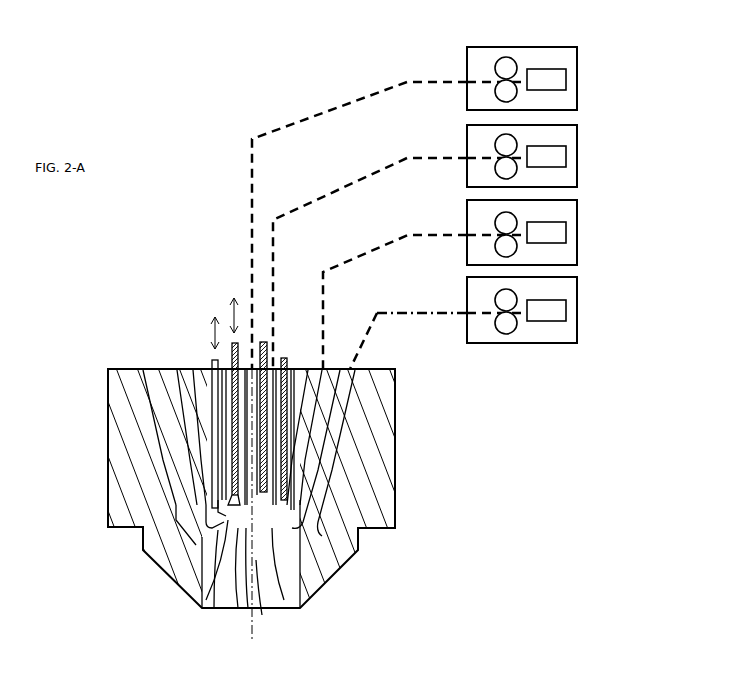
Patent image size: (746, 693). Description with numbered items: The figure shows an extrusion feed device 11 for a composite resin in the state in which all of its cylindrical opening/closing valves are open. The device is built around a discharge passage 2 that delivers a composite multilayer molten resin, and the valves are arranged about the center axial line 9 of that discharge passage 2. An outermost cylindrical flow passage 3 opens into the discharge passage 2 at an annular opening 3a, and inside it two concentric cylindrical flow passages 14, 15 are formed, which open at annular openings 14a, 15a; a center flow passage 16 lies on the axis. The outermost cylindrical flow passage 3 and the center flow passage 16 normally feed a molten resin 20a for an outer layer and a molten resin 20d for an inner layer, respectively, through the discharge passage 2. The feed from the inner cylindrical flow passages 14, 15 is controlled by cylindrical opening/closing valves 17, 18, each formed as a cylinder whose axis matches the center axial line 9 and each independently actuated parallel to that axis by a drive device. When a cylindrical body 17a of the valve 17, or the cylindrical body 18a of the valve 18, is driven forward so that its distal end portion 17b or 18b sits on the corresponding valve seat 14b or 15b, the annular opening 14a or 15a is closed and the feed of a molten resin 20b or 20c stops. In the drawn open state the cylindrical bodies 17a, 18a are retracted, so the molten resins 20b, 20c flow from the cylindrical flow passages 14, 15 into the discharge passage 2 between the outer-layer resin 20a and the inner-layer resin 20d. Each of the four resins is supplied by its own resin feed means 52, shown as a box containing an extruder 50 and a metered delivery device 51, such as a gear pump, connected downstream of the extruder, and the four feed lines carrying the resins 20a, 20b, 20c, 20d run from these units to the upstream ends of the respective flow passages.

The discharge passage 2 is at (278, 582).
The outermost cylindrical flow passage 3 is at (338, 431).
The annular opening 3a is at (212, 540).
The center axial line 9 is at (254, 592).
The extrusion feed device 11 is at (347, 579).
The cylindrical flow passage 14 is at (318, 402).
The annular opening 14a is at (212, 566).
The valve seat 14b is at (207, 513).
The cylindrical flow passage 15 is at (274, 369).
The annular opening 15a is at (248, 577).
The valve seat 15b is at (224, 570).
The center flow passage 16 is at (254, 368).
The cylindrical opening/closing valve 17 is at (213, 360).
The cylindrical body 17a is at (214, 380).
The distal end portion 17b is at (212, 509).
The cylindrical opening/closing valve 18 is at (232, 342).
The cylindrical body 18a is at (216, 430).
The distal end portion 18b is at (220, 478).
The molten resin for outer layer 20a is at (378, 301).
The molten resin 20b is at (330, 259).
The molten resin 20c is at (283, 203).
The molten resin for inner layer 20d is at (268, 123).
The extruder 50 is at (544, 70).
The metered delivery device 51 is at (507, 58).
The resin feed means 52 is at (541, 180).